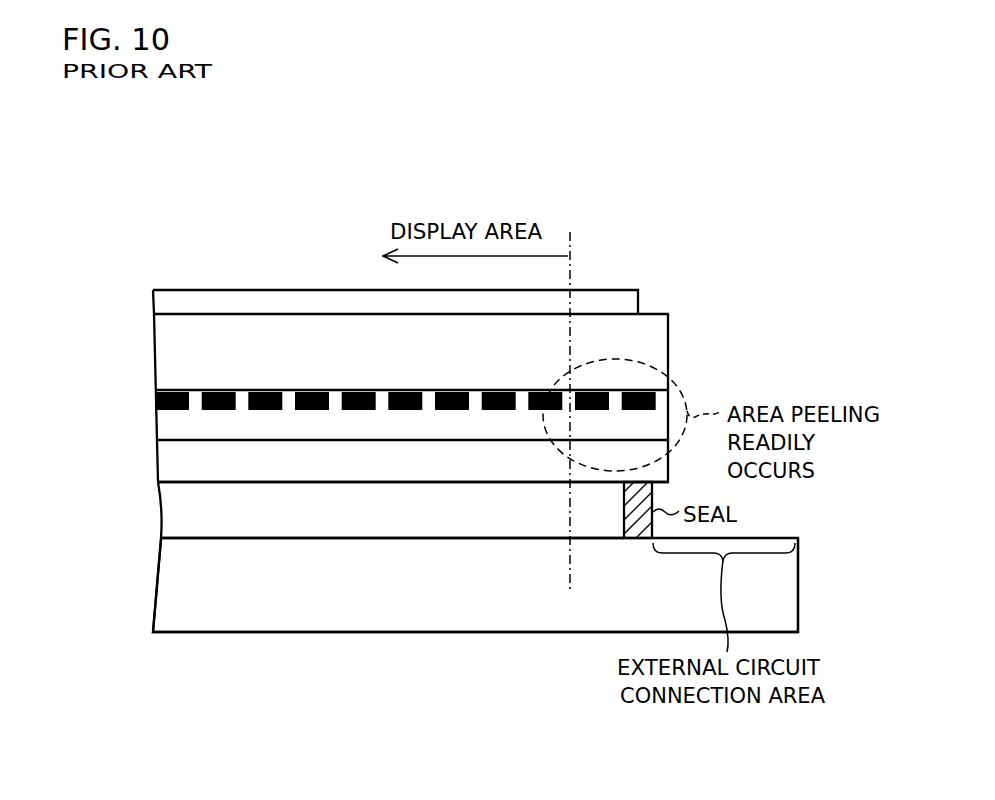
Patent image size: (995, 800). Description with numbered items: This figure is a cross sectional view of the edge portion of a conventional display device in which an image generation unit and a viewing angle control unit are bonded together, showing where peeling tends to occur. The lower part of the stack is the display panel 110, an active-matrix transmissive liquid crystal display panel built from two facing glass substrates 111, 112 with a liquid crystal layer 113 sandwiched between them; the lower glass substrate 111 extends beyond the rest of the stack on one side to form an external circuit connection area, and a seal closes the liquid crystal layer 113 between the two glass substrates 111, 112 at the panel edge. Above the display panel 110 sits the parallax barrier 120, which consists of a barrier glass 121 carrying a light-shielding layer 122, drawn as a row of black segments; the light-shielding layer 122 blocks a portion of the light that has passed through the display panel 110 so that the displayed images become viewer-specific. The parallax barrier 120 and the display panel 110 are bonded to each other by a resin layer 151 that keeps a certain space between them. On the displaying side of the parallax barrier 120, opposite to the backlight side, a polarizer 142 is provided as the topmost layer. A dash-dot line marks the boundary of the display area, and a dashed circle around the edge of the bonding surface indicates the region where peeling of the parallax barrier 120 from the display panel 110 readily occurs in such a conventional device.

The display panel 110 is at (80, 453).
The glass substrate 111 is at (157, 579).
The glass substrate 112 is at (157, 469).
The liquid crystal layer 113 is at (159, 513).
The parallax barrier 120 is at (80, 347).
The barrier glass 121 is at (156, 363).
The light-shielding layer 122 is at (156, 401).
The resin layer 151 is at (156, 433).
The polarizer 142 is at (156, 306).